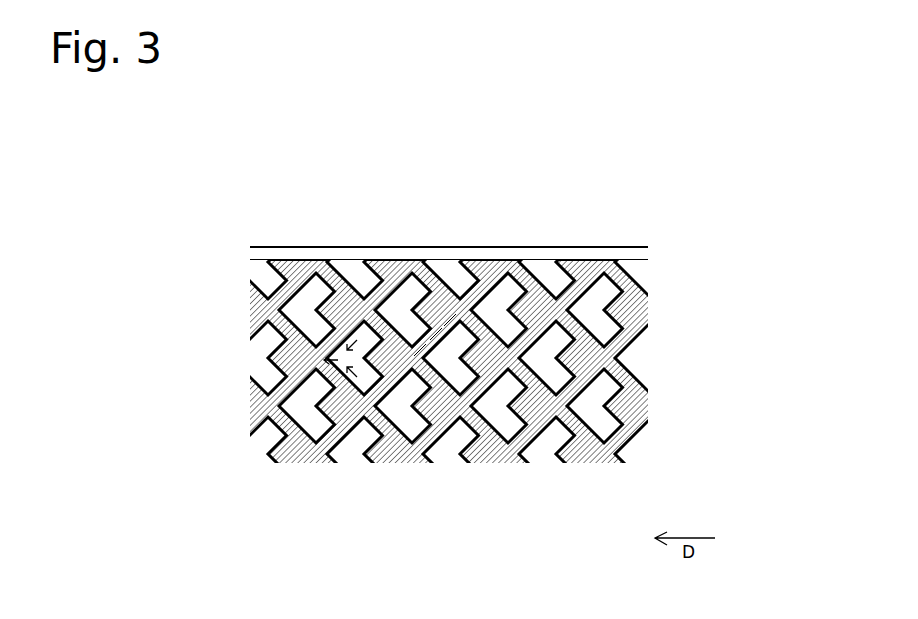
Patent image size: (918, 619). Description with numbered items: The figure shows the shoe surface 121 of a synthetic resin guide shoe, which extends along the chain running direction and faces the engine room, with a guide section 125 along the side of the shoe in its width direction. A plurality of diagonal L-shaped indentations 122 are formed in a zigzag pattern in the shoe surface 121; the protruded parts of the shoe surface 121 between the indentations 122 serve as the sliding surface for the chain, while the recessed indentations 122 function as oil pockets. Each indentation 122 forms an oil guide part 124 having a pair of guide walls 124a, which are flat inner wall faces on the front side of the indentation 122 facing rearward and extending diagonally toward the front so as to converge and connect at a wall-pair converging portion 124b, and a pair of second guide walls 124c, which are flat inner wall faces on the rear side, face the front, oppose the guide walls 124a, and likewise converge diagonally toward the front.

The shoe surface 121 is at (130, 197).
The diagonal L-shaped indentation 122 is at (592, 305).
The oil guide part 124 is at (597, 238).
The guide wall 124a is at (432, 357).
The wall-pair converging portion 124b is at (420, 352).
The second guide wall 124c is at (470, 350).
The guide section 125 is at (302, 255).